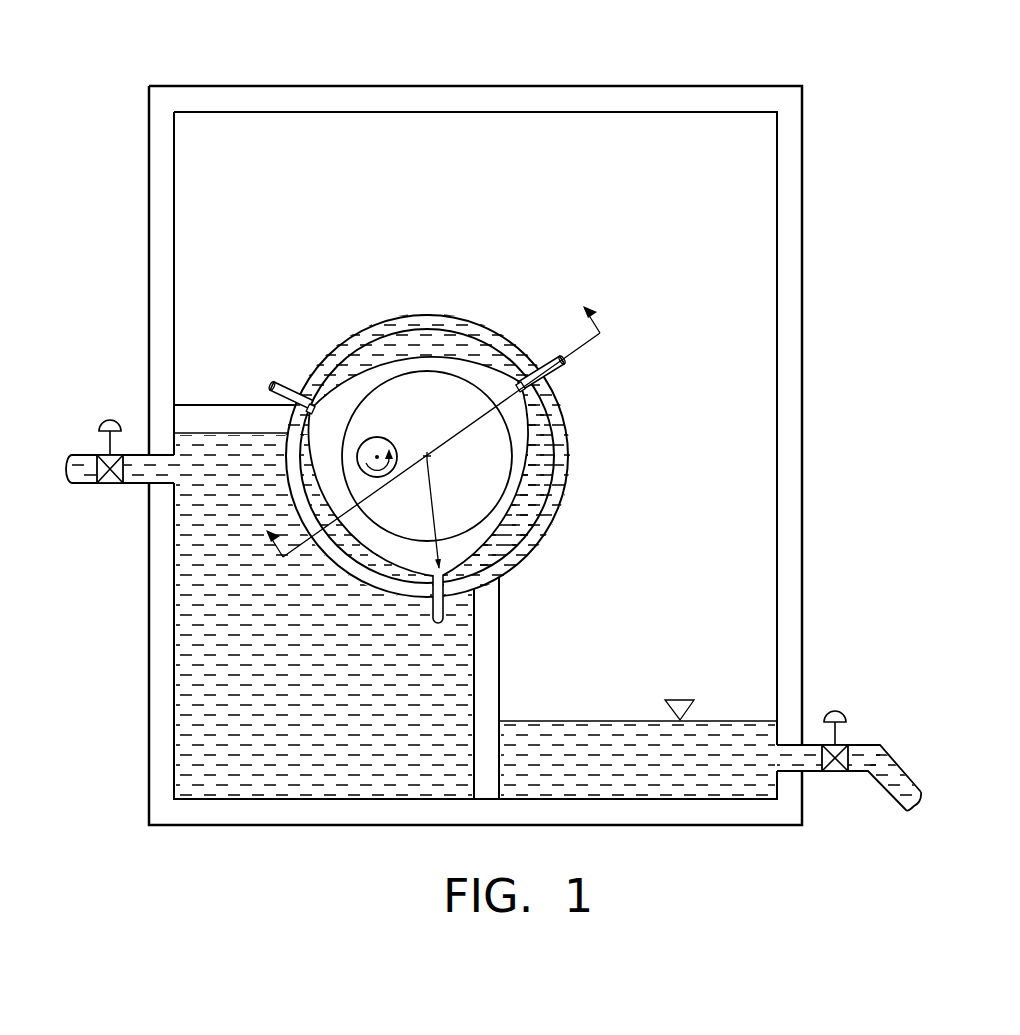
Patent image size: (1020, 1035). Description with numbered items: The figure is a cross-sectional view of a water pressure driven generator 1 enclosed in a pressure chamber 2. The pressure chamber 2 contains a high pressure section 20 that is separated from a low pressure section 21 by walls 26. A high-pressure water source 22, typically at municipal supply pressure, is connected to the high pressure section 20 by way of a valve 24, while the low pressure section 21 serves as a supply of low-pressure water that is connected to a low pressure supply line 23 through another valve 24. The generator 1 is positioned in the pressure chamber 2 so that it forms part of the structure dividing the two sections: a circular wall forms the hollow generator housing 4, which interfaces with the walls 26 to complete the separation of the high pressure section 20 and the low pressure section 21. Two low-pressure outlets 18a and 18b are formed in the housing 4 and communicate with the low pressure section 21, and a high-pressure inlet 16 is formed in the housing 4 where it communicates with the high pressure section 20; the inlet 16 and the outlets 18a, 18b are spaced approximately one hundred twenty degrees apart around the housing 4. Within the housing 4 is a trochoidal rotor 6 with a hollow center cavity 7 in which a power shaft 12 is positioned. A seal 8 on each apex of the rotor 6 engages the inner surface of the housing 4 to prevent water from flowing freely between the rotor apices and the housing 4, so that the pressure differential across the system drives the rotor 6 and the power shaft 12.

The water pressure driven generator 1 is at (445, 440).
The pressure chamber 2 is at (413, 74).
The generator housing 4 is at (370, 316).
The rotor 6 is at (548, 407).
The center cavity 7 is at (459, 415).
The seal 8 is at (311, 404).
The power shaft 12 is at (363, 440).
The high-pressure inlet 16 is at (443, 622).
The low-pressure outlet 18a is at (562, 366).
The low-pressure outlet 18b is at (273, 383).
The high pressure section 20 is at (362, 692).
The low pressure section 21 is at (660, 660).
The high-pressure water source 22 is at (84, 452).
The low pressure supply line 23 is at (850, 745).
The valve 24 is at (110, 420).
The walls 26 is at (193, 414).